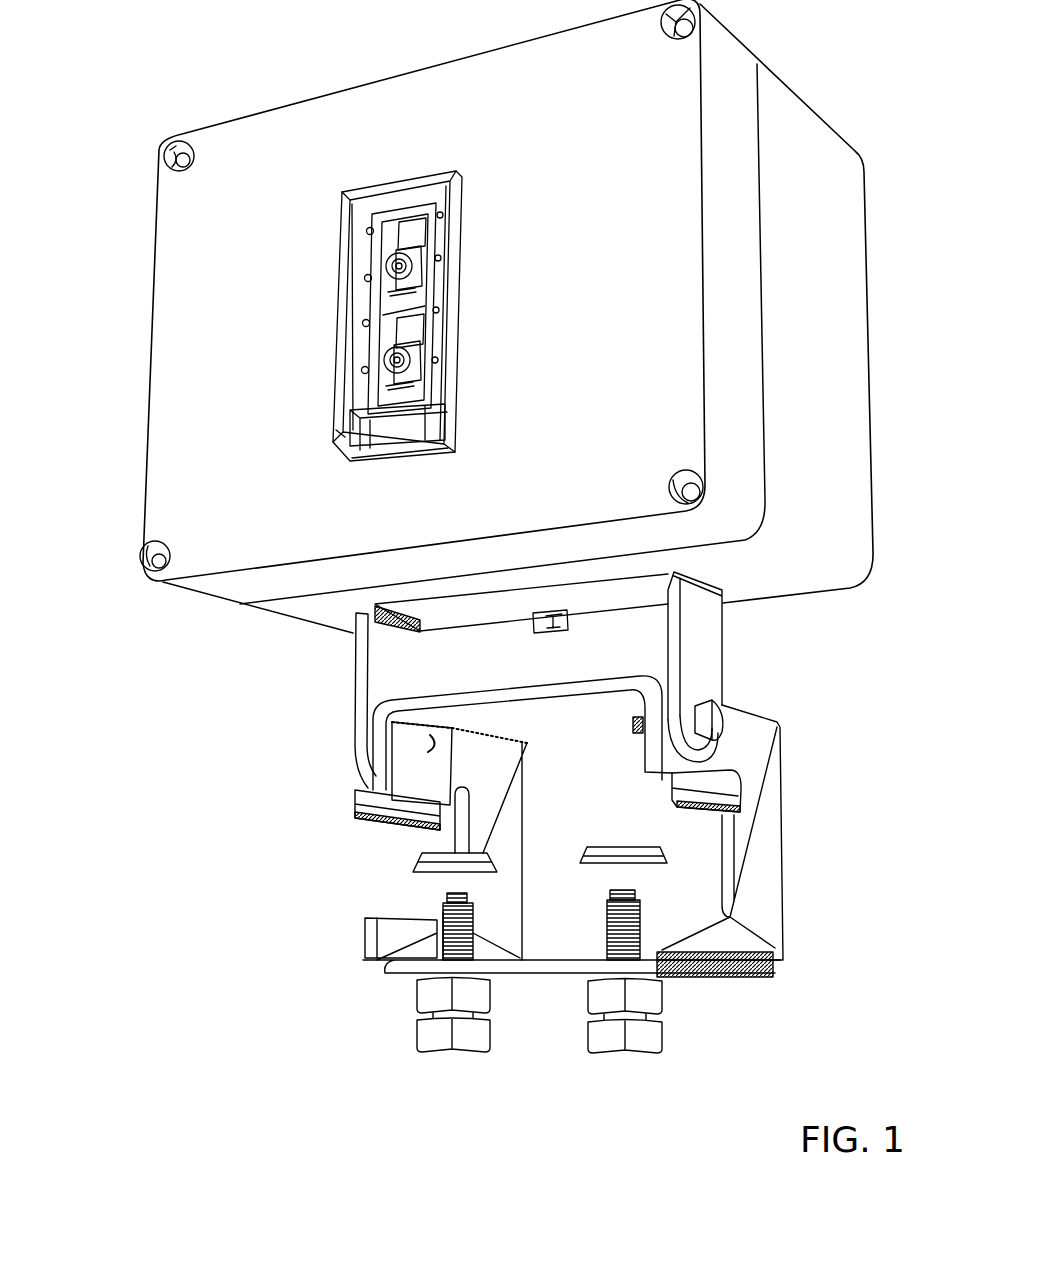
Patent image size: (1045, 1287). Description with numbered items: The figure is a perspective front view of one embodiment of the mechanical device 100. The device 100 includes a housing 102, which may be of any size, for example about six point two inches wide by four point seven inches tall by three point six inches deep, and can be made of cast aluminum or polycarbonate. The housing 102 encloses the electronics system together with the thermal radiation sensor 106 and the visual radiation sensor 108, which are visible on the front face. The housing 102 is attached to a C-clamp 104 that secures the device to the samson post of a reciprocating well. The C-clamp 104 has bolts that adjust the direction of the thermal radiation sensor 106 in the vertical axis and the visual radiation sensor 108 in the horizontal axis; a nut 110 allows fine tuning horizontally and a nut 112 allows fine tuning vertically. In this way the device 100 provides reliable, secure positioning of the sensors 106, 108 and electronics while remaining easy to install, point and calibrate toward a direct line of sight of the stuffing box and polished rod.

The mechanical device 100 is at (96, 70).
The housing 102 is at (815, 90).
The C-clamp 104 is at (352, 909).
The thermal radiation sensor 106 is at (472, 226).
The visual radiation sensor 108 is at (471, 338).
The nut 110 is at (526, 639).
The nut 112 is at (734, 692).